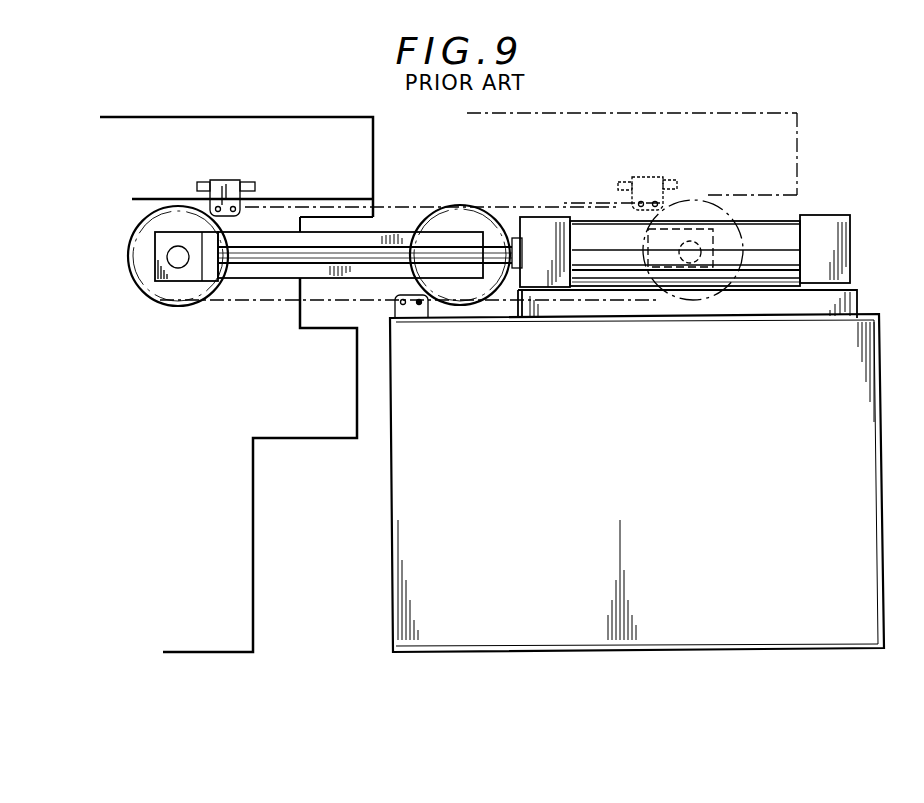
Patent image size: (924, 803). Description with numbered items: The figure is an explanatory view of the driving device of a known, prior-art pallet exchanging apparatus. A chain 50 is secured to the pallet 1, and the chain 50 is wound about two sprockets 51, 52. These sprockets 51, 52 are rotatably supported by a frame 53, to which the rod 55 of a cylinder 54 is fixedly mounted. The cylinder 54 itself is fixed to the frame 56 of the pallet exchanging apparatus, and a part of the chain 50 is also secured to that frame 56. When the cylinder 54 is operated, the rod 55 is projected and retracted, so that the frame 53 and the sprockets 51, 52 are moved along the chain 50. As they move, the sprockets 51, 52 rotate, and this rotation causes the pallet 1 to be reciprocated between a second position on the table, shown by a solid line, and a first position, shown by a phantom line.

The pallet 1 is at (240, 130).
The chain 50 is at (400, 207).
The sprocket 51 is at (180, 295).
The sprocket 52 is at (473, 295).
The frame 53 is at (258, 275).
The cylinder 54 is at (823, 222).
The rod 55 is at (332, 252).
The frame of the pallet exchanging apparatus 56 is at (672, 625).